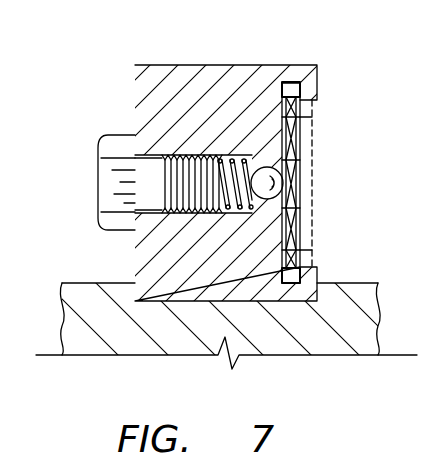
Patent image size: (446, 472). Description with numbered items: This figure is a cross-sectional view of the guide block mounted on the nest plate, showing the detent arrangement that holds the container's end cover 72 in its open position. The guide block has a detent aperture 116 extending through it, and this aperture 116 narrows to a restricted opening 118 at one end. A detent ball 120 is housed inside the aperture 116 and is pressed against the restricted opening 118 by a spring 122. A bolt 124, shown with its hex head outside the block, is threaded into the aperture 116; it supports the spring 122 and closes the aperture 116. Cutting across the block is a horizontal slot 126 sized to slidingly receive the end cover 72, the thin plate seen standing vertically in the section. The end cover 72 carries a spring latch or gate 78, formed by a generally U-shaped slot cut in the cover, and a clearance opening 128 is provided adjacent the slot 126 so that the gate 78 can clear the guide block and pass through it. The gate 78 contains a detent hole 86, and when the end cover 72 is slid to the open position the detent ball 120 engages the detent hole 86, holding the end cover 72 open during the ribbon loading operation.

The end cover 72 is at (300, 127).
The spring latch or gate 78 is at (300, 213).
The detent hole 86 is at (298, 178).
The detent aperture 116 is at (222, 157).
The restricted opening 118 is at (303, 219).
The detent ball 120 is at (285, 170).
The spring 122 is at (228, 205).
The bolt 124 is at (113, 190).
The horizontal slot 126 is at (291, 82).
The clearance opening 128 is at (307, 280).